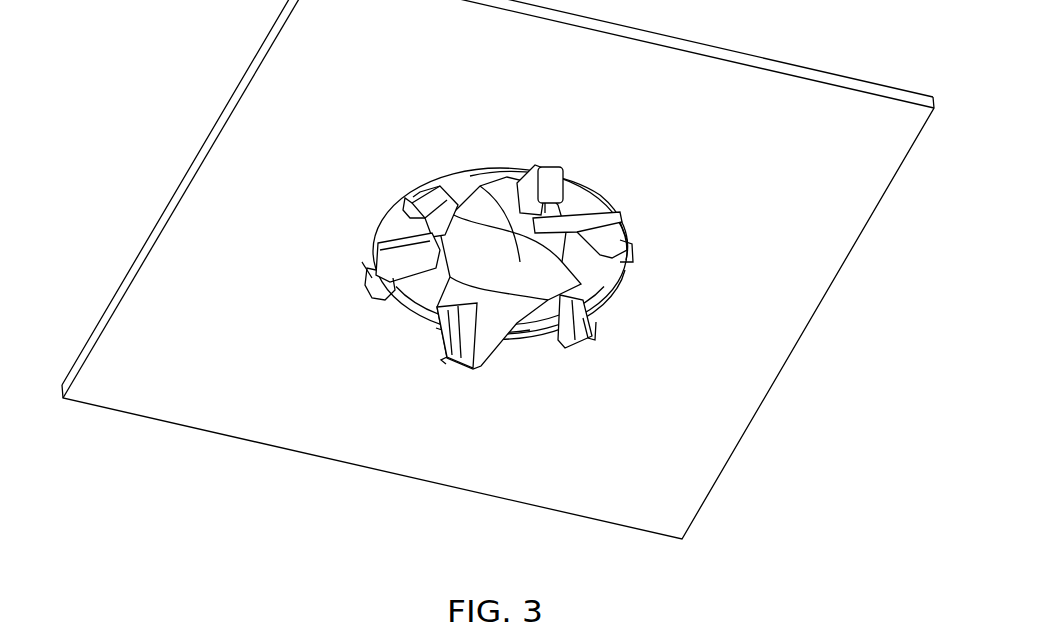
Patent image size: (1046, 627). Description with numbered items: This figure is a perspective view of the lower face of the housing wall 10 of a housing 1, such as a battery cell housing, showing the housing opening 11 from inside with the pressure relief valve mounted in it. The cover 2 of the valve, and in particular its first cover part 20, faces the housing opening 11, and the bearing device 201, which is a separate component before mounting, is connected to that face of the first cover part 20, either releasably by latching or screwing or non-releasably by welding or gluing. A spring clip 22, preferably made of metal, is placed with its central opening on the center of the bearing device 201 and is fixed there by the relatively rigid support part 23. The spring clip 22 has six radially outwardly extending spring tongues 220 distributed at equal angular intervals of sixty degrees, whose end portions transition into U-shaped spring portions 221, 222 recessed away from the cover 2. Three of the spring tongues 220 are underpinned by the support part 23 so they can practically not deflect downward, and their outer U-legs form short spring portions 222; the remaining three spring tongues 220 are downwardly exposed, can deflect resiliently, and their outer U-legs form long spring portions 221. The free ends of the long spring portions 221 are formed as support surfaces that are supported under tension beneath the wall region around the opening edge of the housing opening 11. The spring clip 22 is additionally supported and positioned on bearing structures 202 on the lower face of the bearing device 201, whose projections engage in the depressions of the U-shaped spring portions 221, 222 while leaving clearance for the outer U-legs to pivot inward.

The housing 1 is at (498, 269).
The housing wall 10 is at (797, 73).
The housing opening 11 is at (507, 332).
The cover 2 is at (502, 275).
The first cover part 20 is at (516, 268).
The bearing device 201 is at (587, 203).
The bearing structures 202 is at (622, 243).
The spring clip 22 is at (502, 275).
The support part 23 is at (504, 307).
The spring tongues 220 is at (526, 197).
The long spring portions 221 is at (549, 167).
The short spring portions 222 is at (413, 197).